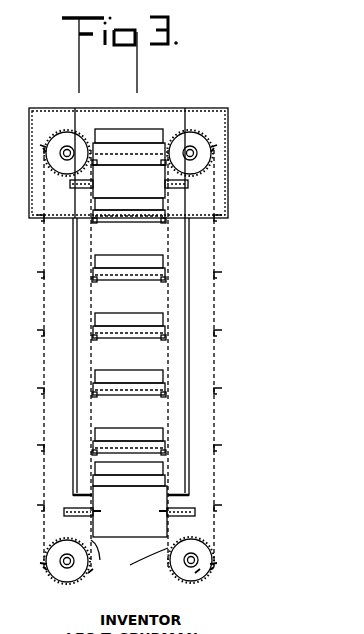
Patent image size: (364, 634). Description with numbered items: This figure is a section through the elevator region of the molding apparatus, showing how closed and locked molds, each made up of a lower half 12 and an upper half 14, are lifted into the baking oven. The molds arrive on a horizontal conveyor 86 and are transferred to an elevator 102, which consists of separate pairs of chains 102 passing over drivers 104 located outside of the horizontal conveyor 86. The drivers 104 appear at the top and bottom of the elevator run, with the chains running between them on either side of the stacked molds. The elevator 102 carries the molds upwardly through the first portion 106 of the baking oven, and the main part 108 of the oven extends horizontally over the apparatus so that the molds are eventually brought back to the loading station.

The lower half 12 is at (124, 332).
The upper half 14 is at (120, 262).
The conveyor 86 is at (123, 510).
The elevator 102 is at (129, 559).
The drivers 104 is at (200, 143).
The first portion 106 is at (182, 408).
The main part 108 is at (110, 108).